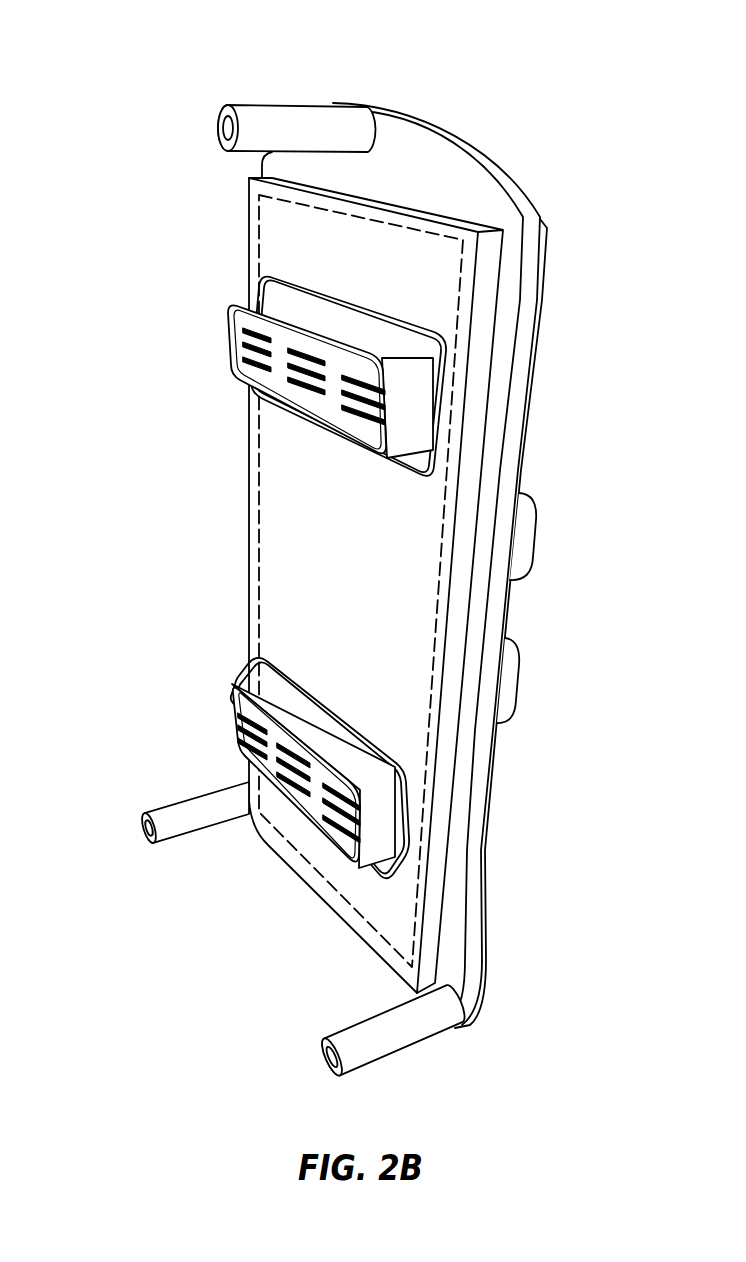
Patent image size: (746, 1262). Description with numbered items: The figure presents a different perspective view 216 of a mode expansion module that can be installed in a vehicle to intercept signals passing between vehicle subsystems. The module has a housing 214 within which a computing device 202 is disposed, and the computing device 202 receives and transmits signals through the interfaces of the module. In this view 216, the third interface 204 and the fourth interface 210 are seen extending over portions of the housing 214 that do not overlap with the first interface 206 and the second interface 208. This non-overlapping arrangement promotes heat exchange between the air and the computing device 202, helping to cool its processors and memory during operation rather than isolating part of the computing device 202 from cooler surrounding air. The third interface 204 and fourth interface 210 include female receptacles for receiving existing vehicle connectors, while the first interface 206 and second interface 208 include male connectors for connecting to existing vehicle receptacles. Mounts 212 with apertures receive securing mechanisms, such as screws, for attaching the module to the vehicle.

The computing device 202 is at (368, 583).
The third interface 204 is at (227, 335).
The first interface 206 is at (537, 540).
The second interface 208 is at (520, 685).
The fourth interface 210 is at (230, 699).
The mount 212 is at (323, 1038).
The housing 214 is at (248, 557).
The different perspective view 216 is at (330, 542).